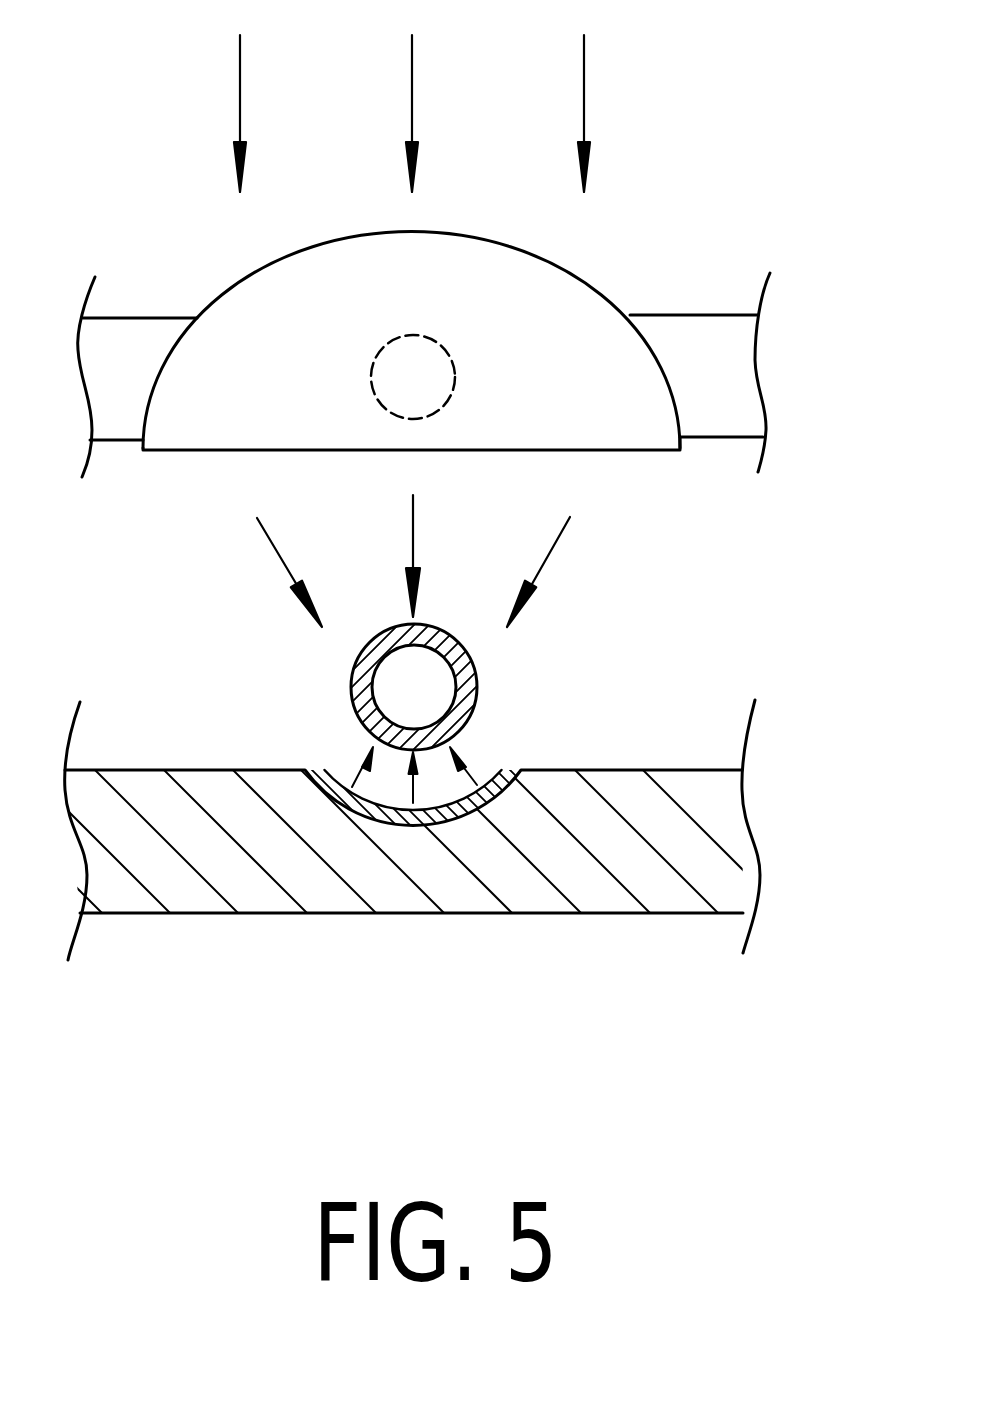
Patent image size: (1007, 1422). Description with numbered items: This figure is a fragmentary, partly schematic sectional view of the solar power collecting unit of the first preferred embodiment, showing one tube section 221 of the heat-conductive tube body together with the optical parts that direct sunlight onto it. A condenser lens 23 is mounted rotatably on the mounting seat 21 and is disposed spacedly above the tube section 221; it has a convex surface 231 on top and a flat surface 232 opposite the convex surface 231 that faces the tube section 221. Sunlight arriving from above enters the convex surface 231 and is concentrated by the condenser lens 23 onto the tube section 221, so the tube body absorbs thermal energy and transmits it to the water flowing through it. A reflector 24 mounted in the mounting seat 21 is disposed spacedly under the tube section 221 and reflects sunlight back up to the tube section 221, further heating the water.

The mounting seat 21 is at (675, 913).
The tube section 221 is at (475, 687).
The condenser lens 23 is at (465, 352).
The convex surface 231 is at (500, 242).
The flat surface 232 is at (635, 450).
The reflector 24 is at (380, 815).